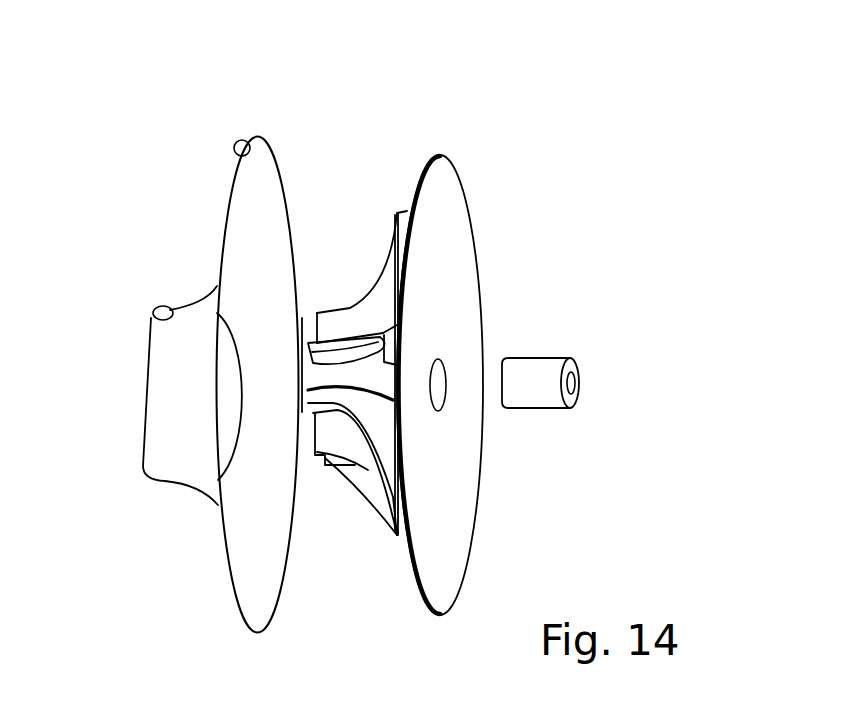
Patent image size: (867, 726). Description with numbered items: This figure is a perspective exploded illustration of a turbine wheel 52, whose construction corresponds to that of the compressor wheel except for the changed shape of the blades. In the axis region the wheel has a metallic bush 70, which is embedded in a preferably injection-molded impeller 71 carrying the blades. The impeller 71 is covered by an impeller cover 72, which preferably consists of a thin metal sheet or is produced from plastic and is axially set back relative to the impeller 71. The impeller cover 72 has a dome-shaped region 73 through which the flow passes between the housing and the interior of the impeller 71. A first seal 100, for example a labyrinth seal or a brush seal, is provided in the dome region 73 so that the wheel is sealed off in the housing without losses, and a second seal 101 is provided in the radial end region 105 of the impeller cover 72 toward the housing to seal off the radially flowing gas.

The turbine wheel 52 is at (449, 320).
The impeller 71 is at (440, 545).
The impeller cover 72 is at (267, 595).
The dome-shaped region 73 is at (172, 445).
The metallic bush 70 is at (537, 390).
The first seal 100 is at (166, 306).
The second seal 101 is at (246, 142).
The radial end region 105 is at (226, 549).